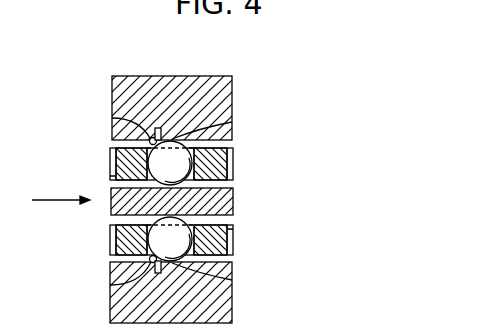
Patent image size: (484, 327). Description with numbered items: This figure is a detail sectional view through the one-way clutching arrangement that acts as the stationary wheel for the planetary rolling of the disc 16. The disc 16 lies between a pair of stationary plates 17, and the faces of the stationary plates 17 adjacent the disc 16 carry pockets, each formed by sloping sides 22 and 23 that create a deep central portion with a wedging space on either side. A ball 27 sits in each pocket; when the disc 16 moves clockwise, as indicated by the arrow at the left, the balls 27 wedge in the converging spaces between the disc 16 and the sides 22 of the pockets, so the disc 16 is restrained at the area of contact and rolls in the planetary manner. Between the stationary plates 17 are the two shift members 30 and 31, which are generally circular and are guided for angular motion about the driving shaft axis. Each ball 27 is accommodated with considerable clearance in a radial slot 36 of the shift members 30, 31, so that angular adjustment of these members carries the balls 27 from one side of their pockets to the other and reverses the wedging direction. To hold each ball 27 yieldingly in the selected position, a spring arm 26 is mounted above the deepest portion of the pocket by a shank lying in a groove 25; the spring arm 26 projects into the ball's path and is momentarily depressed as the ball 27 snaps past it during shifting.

The disc 16 is at (233, 199).
The stationary plate 17 is at (232, 85).
The sloping side 22 is at (232, 122).
The sloping side 23 is at (148, 139).
The groove 25 is at (112, 118).
The spring arm 26 is at (110, 160).
The rolling element 27 is at (200, 160).
The shift member 30 is at (233, 250).
The shift member 31 is at (234, 172).
The radial slot 36 is at (112, 181).